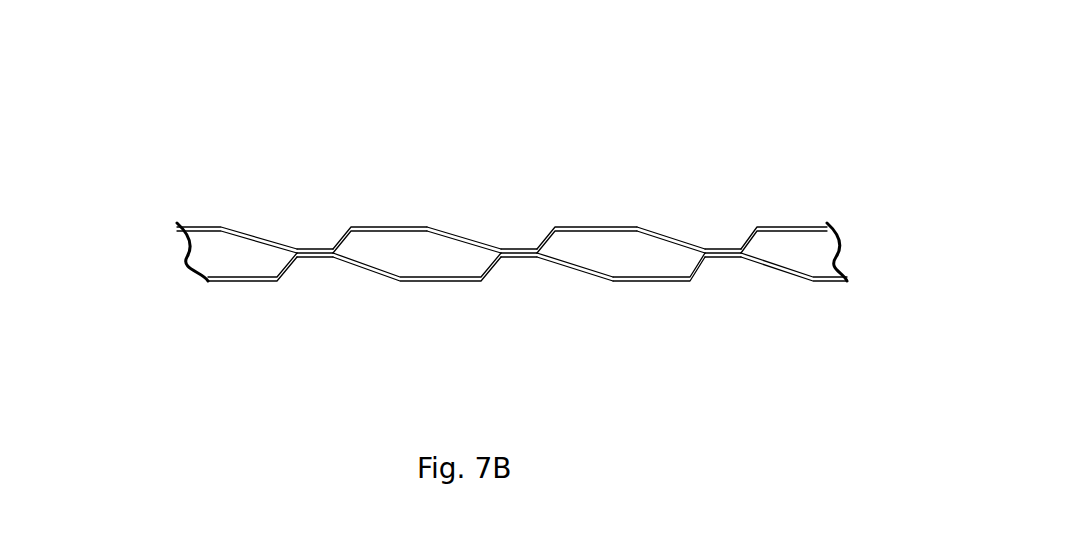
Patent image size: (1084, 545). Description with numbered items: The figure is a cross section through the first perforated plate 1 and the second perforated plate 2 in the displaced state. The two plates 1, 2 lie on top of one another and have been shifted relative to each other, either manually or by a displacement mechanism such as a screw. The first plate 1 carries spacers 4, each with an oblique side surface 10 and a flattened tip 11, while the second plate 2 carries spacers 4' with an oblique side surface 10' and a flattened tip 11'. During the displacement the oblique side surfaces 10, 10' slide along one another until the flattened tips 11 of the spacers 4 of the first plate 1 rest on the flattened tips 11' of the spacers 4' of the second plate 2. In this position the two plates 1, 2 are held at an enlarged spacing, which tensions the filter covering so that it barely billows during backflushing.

The first perforated plate 1 is at (446, 312).
The second perforated plate 2 is at (423, 205).
The spacer 4 is at (402, 333).
The spacer 4' is at (519, 190).
The oblique side surface 10 is at (575, 311).
The oblique side surface 10' is at (491, 185).
The flattened tip 11 is at (776, 300).
The flattened tip 11' is at (673, 185).